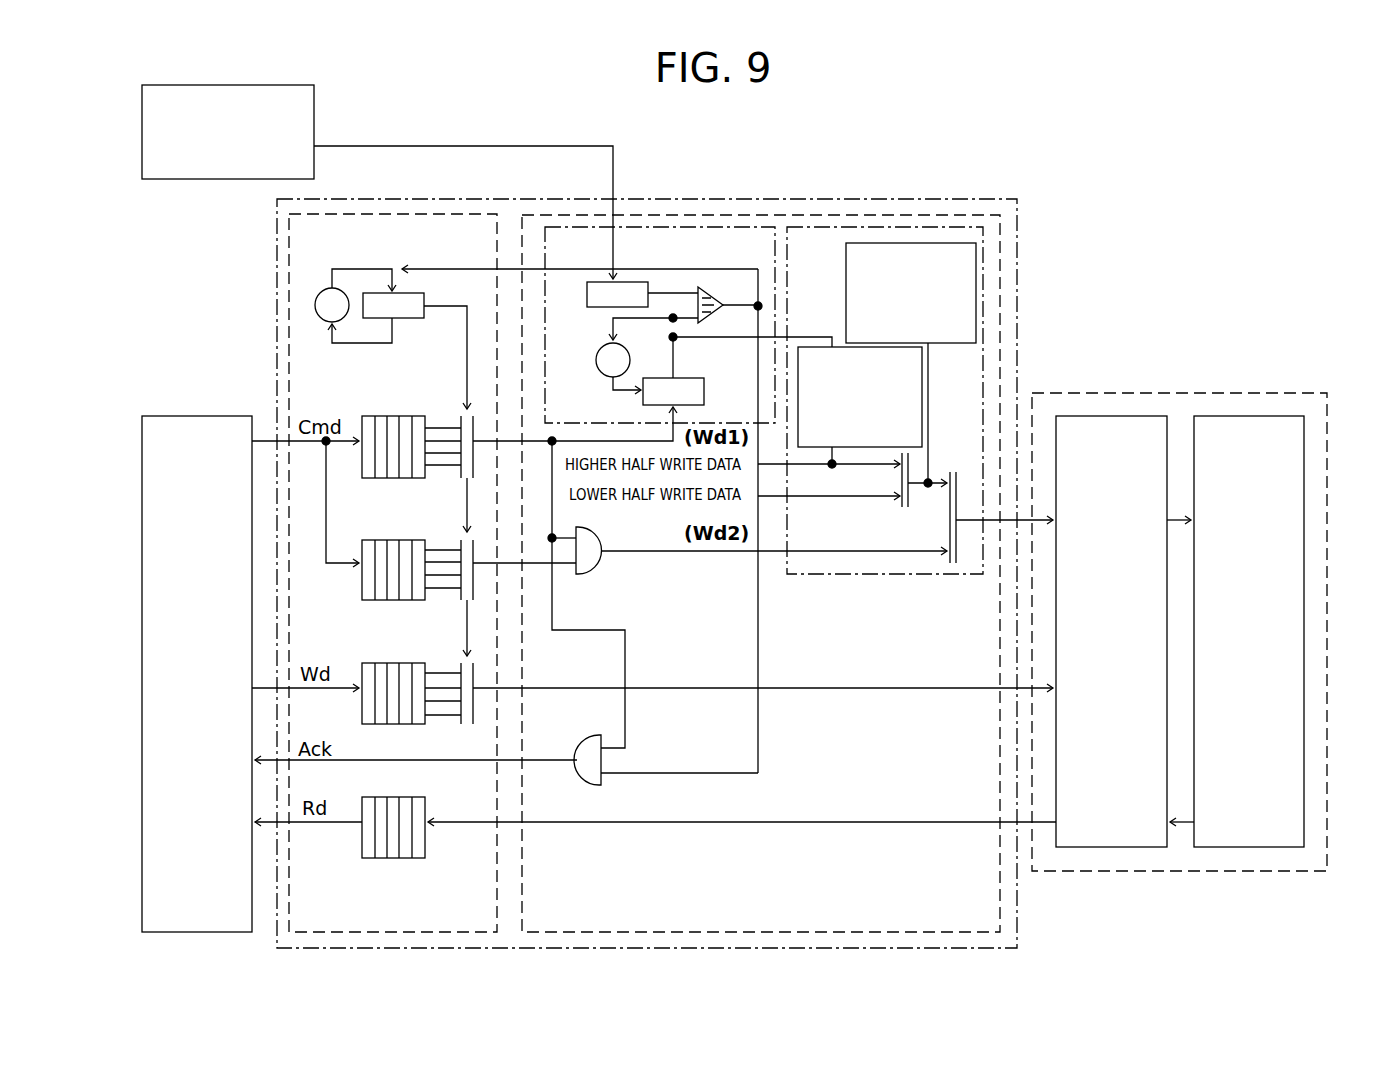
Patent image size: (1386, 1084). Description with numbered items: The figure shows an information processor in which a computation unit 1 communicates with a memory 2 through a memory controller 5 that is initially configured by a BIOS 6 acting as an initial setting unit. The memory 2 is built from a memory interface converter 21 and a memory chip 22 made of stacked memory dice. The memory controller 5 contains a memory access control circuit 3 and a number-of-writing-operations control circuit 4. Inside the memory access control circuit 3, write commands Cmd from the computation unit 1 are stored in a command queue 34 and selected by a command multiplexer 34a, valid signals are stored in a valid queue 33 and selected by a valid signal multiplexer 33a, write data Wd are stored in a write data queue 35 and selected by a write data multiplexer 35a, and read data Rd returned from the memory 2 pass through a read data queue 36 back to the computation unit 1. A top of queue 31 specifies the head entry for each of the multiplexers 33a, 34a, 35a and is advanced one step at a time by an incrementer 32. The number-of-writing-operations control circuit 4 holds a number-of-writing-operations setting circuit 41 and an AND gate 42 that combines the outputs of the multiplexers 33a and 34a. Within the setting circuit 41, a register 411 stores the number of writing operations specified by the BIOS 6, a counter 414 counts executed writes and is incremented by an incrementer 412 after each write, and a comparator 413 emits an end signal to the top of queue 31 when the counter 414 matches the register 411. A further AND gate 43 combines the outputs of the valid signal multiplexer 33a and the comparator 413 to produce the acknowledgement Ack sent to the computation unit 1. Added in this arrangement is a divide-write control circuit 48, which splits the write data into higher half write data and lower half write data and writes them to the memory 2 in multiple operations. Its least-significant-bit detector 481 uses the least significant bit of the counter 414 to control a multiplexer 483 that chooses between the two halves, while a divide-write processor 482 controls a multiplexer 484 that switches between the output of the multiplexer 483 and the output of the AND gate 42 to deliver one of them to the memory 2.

The computation unit 1 is at (178, 416).
The memory 2 is at (1182, 393).
The memory access control circuit 3 is at (289, 263).
The number-of-writing-operations control circuit 4 is at (1017, 282).
The memory controller 5 is at (910, 198).
The BIOS (initial setting unit) 6 is at (315, 108).
The memory interface converter 21 is at (1116, 416).
The memory chip 22 is at (1250, 416).
The top of queue 31 is at (410, 320).
The +1 incrementer 32 is at (326, 322).
The valid queue 33 is at (362, 452).
The valid signal multiplexer 33a is at (461, 478).
The command queue 34 is at (362, 584).
The command multiplexer 34a is at (461, 597).
The write data queue 35 is at (362, 700).
The write data multiplexer 35a is at (467, 724).
The read data queue 36 is at (425, 858).
The number-of-writing-operations setting circuit 41 is at (754, 228).
The AND gate 42 is at (600, 565).
The AND gate 43 is at (582, 739).
The divide-write control circuit 48 is at (895, 574).
The register 411 is at (635, 280).
The +1 incrementer 412 is at (602, 373).
The comparator 413 is at (723, 284).
The counter 414 is at (690, 378).
The least-significant-bit detector 481 is at (812, 347).
The divide-write processor 482 is at (954, 344).
The multiplexer 483 is at (901, 507).
The multiplexer 484 is at (950, 526).